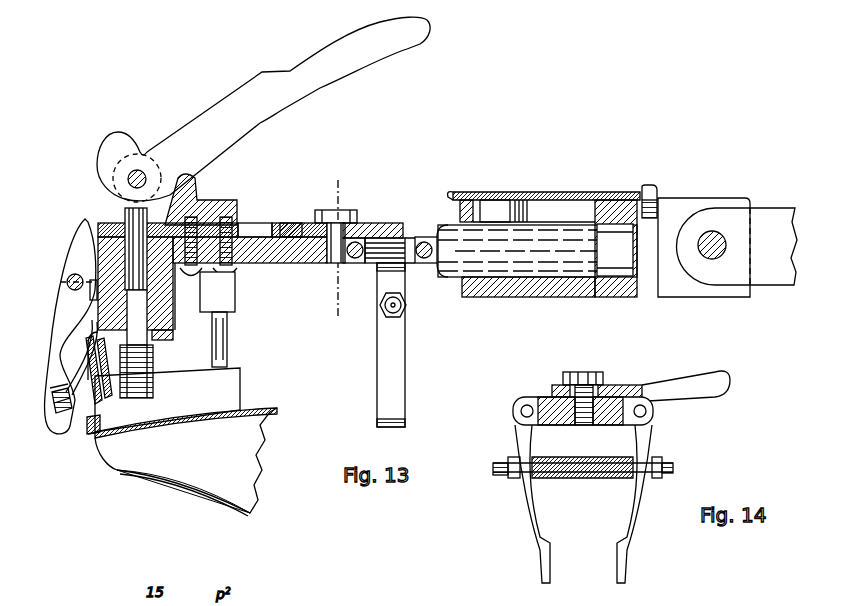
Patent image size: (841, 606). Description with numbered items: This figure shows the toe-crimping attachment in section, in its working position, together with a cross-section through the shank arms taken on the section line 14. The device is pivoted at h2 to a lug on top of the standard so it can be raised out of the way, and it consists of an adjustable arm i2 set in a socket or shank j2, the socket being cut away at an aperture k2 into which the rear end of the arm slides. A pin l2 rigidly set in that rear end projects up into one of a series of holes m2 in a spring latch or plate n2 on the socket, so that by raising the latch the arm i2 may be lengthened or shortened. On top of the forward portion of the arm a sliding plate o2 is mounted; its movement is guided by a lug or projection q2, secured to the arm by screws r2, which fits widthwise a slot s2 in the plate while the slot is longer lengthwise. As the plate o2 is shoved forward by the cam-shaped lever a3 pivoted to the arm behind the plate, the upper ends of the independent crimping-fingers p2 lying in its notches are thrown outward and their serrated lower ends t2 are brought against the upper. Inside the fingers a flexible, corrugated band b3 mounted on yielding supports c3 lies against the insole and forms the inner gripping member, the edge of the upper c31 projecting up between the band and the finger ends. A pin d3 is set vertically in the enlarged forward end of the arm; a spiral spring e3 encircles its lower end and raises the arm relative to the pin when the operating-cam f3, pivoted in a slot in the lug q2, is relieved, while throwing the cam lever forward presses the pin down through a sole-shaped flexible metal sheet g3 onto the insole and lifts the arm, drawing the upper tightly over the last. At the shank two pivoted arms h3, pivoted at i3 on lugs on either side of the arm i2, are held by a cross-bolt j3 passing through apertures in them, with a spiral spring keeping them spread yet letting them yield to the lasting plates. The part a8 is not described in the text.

In FIG. 13, the crimping-fingers p2 is at (80, 243).
In FIG. 13, the link a8 is at (92, 324).
In FIG. 13, the operating-cam f3 is at (263, 109).
In FIG. 13, the pin d3 is at (126, 213).
In FIG. 13, the lug or projection q2 is at (214, 205).
In FIG. 13, the slot s2 is at (253, 228).
In FIG. 13, the sliding plate o2 is at (284, 226).
In FIG. 13, the screws r2 is at (188, 278).
In FIG. 13, the spiral spring e3 is at (150, 378).
In FIG. 13, the flexible band b3 is at (167, 400).
In FIG. 13, the flexible sheet of metal g3 is at (222, 410).
In FIG. 13, the yielding supports c3 is at (98, 360).
In FIG. 13, the serrations t2 is at (68, 395).
In FIG. 13, the upper c31 is at (93, 440).
In FIG. 13, the section line 14 is at (336, 252).
In FIG. 13, the lever a3 is at (376, 225).
In FIG. 14, the lever a3 is at (731, 382).
In FIG. 13, the pivoted arms h3 is at (386, 250).
In FIG. 14, the pivoted arms h3 is at (580, 462).
In FIG. 13, the cross-bolt j3 is at (408, 308).
In FIG. 14, the cross-bolt j3 is at (672, 462).
In FIG. 13, the adjustable arm i2 is at (425, 233).
In FIG. 13, the aperture k2 is at (583, 208).
In FIG. 13, the spring latch or plate n2 is at (458, 191).
In FIG. 13, the holes m2 is at (502, 192).
In FIG. 13, the pin l2 is at (524, 195).
In FIG. 13, the socket or shank j2 is at (668, 197).
In FIG. 13, the pivot h2 is at (715, 240).
In FIG. 14, the pivots i3 is at (520, 411).